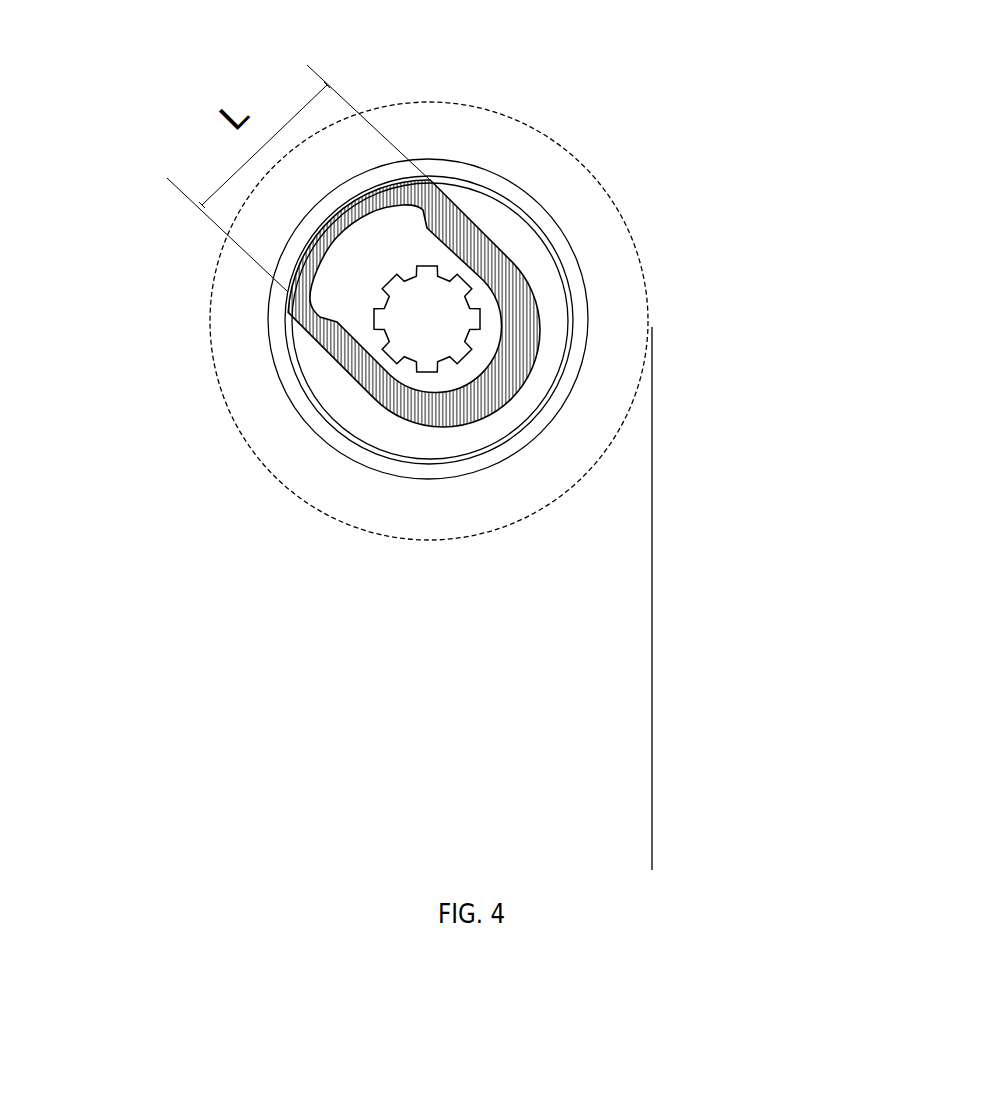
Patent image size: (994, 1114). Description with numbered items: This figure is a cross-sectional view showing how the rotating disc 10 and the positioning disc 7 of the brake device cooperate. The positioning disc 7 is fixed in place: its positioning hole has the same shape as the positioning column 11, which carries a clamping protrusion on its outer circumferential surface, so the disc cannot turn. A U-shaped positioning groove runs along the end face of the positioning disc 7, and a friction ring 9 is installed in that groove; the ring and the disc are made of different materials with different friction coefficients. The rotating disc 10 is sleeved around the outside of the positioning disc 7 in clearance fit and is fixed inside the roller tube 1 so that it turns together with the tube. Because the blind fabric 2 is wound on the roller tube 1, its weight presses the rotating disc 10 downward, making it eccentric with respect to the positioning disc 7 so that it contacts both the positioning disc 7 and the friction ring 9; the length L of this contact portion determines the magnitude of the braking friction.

The roller tube 1 is at (255, 407).
The blind fabric 2 is at (655, 676).
The positioning disc 7 is at (493, 205).
The friction ring 9 is at (515, 272).
The rotating disc 10 is at (278, 338).
The positioning column 11 is at (412, 338).